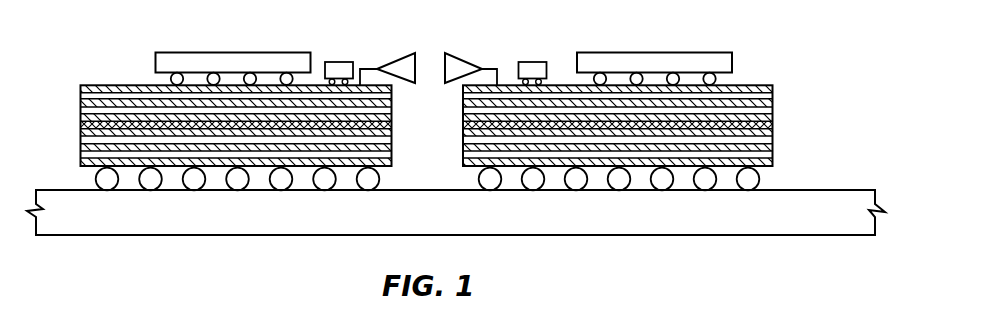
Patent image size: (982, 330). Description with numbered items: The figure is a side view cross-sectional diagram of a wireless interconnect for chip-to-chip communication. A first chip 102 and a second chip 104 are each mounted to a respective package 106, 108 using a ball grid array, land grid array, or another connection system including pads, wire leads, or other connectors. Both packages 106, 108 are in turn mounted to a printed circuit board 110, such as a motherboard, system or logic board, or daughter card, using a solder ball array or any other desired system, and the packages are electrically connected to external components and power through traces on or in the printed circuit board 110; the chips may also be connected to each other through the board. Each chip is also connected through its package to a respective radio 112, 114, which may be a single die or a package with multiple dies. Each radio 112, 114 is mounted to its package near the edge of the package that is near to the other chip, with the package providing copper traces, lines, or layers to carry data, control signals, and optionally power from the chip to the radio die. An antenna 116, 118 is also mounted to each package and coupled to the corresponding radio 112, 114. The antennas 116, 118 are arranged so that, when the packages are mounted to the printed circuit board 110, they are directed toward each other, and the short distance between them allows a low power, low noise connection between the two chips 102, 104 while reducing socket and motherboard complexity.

The first chip 102 is at (183, 52).
The second chip 104 is at (725, 52).
The package 106 is at (106, 85).
The package 108 is at (768, 85).
The printed circuit board 110 is at (857, 190).
The radio 112 is at (340, 62).
The radio 114 is at (537, 62).
The antenna 116 is at (400, 58).
The antenna 118 is at (470, 58).